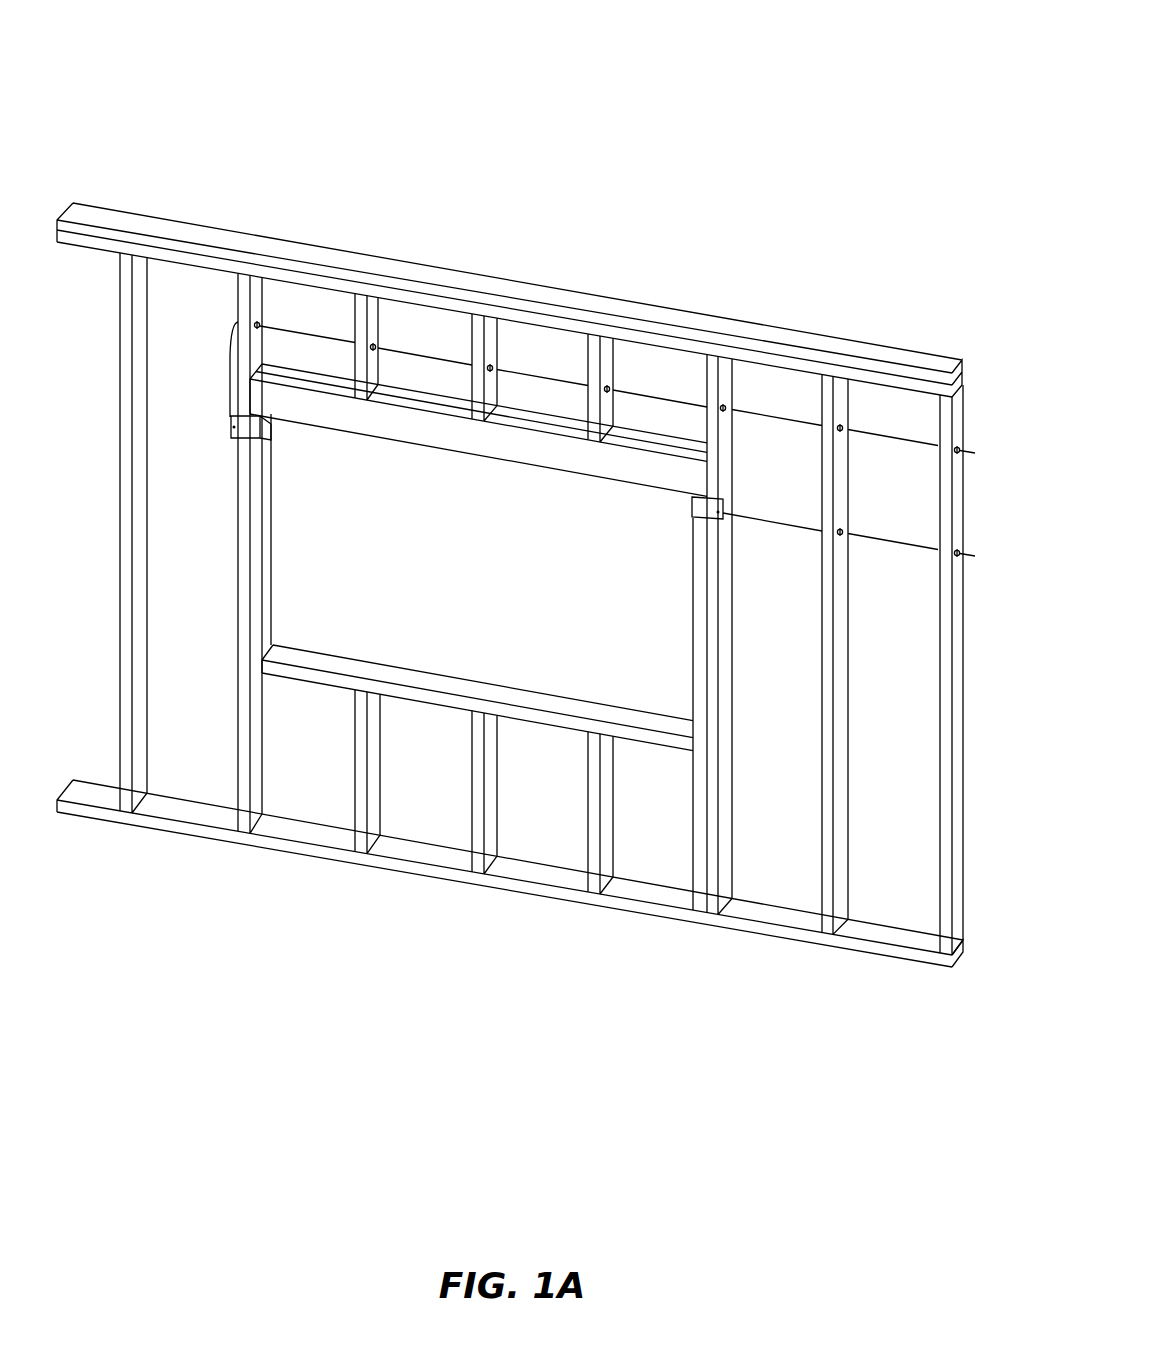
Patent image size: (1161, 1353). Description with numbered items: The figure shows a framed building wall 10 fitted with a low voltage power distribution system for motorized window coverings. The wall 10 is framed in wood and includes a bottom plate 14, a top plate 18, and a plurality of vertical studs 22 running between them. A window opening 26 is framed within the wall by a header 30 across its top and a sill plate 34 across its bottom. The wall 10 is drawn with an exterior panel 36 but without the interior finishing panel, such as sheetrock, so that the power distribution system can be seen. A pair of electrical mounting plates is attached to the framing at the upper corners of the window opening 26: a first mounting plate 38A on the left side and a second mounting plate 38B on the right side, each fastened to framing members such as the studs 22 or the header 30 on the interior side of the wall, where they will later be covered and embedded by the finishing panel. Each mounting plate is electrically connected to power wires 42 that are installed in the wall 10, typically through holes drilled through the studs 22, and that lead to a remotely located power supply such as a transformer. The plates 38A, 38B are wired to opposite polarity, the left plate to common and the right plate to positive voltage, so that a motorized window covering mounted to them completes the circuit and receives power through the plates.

The framed building wall 10 is at (655, 258).
The bottom plate 14 is at (440, 862).
The top plate 18 is at (508, 318).
The vertical studs 22 is at (137, 398).
The window opening 26 is at (402, 462).
The header 30 is at (500, 440).
The sill plate 34 is at (455, 703).
The exterior panel 36 is at (792, 843).
The first mounting plate 38A is at (248, 420).
The second mounting plate 38B is at (712, 498).
The power wires 42 is at (795, 418).